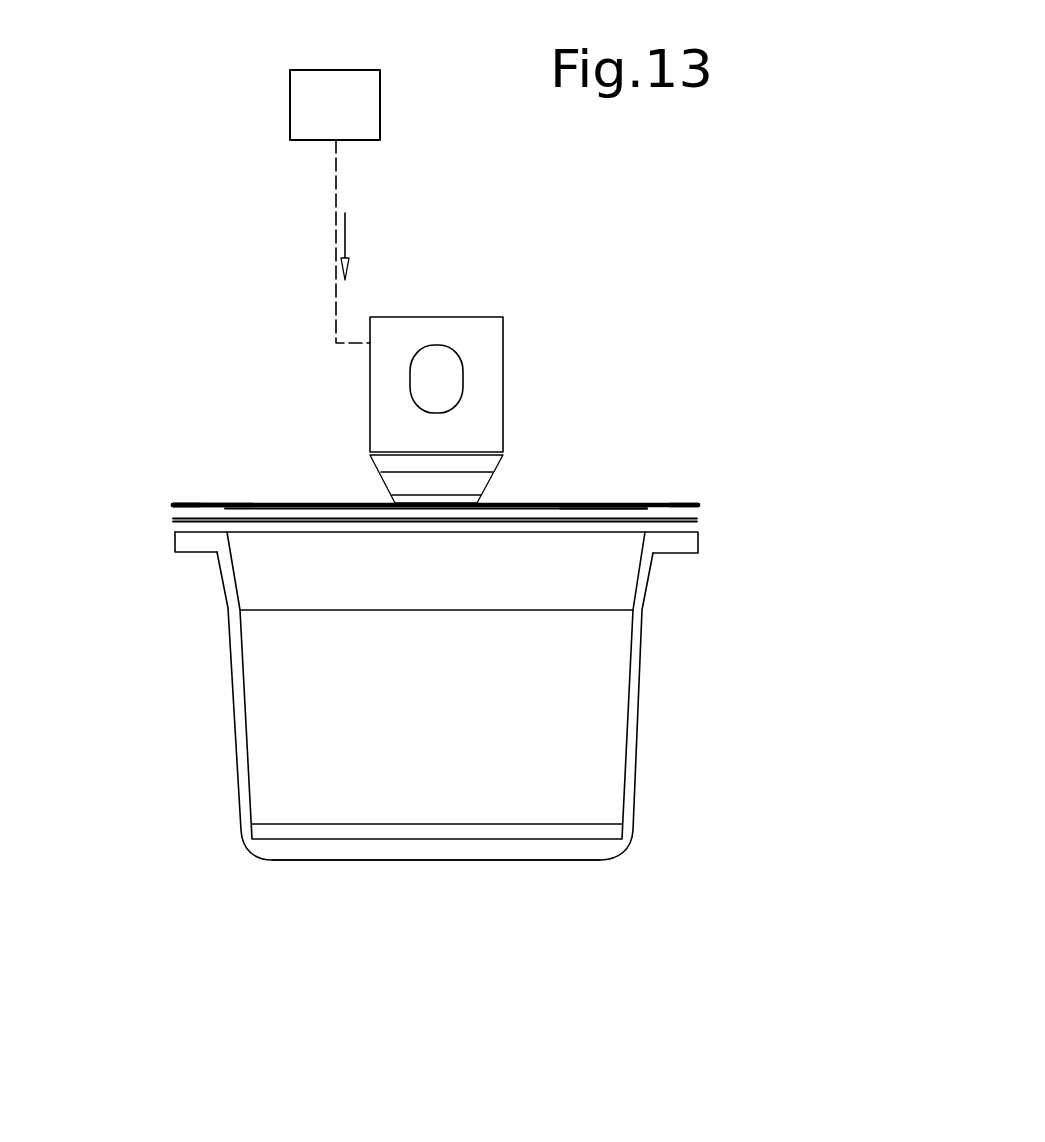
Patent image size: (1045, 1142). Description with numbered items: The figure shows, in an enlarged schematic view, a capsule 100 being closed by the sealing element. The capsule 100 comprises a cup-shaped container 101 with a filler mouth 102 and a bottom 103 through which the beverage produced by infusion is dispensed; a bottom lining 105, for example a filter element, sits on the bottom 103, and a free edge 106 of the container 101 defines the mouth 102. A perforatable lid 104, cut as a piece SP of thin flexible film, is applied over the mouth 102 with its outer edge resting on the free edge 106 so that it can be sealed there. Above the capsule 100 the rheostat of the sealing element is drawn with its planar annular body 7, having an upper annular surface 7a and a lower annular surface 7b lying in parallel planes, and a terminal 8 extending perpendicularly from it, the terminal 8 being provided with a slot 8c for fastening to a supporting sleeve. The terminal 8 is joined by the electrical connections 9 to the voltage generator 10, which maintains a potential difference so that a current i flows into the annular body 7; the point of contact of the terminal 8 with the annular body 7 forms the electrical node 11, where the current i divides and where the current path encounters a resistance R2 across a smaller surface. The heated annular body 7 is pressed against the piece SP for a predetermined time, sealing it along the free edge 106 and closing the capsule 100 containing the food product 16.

The voltage generator 10 is at (365, 85).
The electrical connections 9 is at (336, 197).
The current i is at (345, 235).
The terminal 8 is at (391, 332).
The slot 8c is at (436, 372).
The electrical node 11 is at (372, 495).
The annular body 7 is at (207, 503).
The upper annular surface 7a is at (253, 505).
The lower annular surface 7b is at (238, 503).
The resistance R2 is at (190, 503).
The perforatable lid 104 is at (582, 507).
The piece of thin flexible material SP is at (700, 520).
The filler mouth 102 is at (619, 532).
The free edge 106 is at (683, 541).
The capsule 100 is at (415, 749).
The food product 16 is at (225, 658).
The container 101 is at (242, 727).
The bottom lining 105 is at (565, 833).
The bottom 103 is at (547, 852).